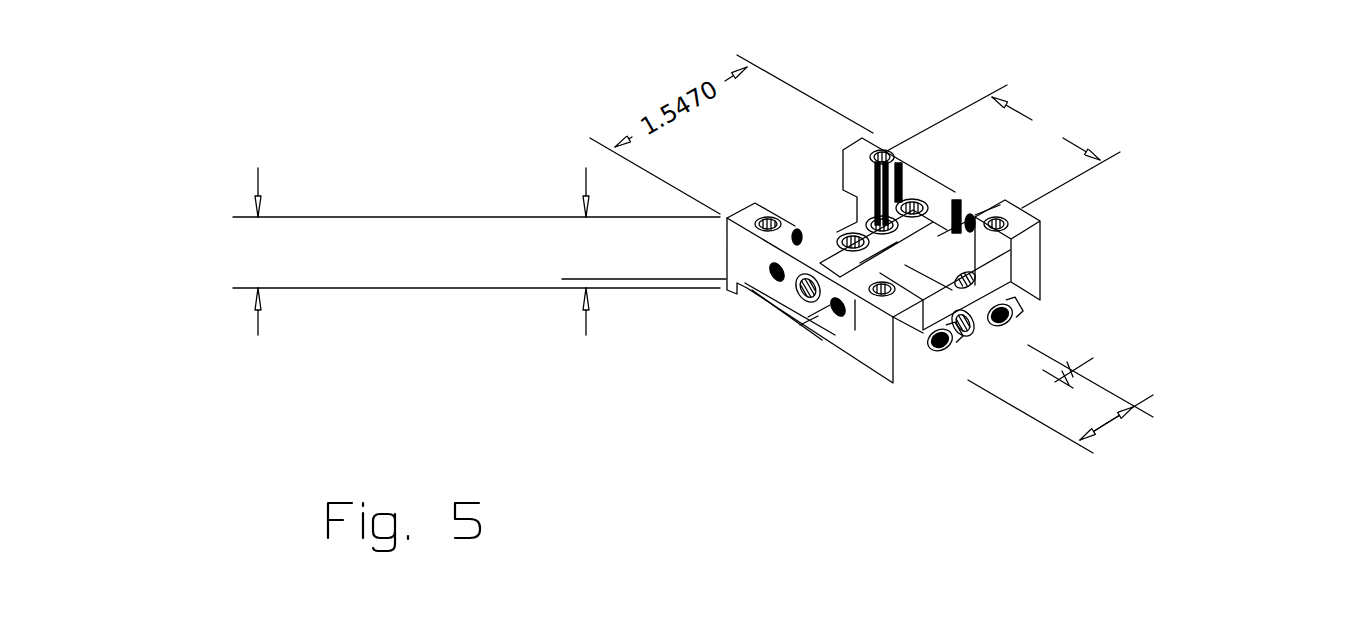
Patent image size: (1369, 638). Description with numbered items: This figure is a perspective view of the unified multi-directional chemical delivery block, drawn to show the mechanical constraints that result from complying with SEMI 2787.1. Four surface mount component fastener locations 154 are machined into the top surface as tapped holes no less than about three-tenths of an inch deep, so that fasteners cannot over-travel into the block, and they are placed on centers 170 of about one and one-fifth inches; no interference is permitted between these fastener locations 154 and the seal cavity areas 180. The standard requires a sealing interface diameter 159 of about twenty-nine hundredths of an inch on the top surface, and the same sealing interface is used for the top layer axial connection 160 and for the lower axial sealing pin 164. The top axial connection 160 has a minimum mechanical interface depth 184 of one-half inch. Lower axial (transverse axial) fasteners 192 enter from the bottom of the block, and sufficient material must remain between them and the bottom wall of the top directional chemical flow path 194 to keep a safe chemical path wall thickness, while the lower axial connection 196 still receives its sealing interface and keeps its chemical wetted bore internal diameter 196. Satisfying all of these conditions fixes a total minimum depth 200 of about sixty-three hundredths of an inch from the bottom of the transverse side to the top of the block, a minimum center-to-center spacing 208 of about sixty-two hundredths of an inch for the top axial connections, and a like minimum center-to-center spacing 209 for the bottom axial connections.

The surface mount component fastener locations 154 is at (992, 200).
The sealing interface diameter 159 is at (913, 224).
The top layer axial connection 160 is at (787, 297).
The lower axial sealing pin 164 is at (960, 357).
The fastener hole centers 170 is at (1095, 110).
The seal cavity areas 180 is at (835, 225).
The minimum mechanical interface depth 184 is at (857, 305).
The lower axial fasteners 192 is at (982, 282).
The top directional chemical flow path 194 is at (902, 252).
The lower axial connection 196 is at (1012, 330).
The total minimum depth 200 is at (177, 284).
The minimum center-to-center spacing of top axial fastener locations 208 is at (758, 408).
The minimum center-to-center spacing of bottom axial connections 209 is at (1243, 398).